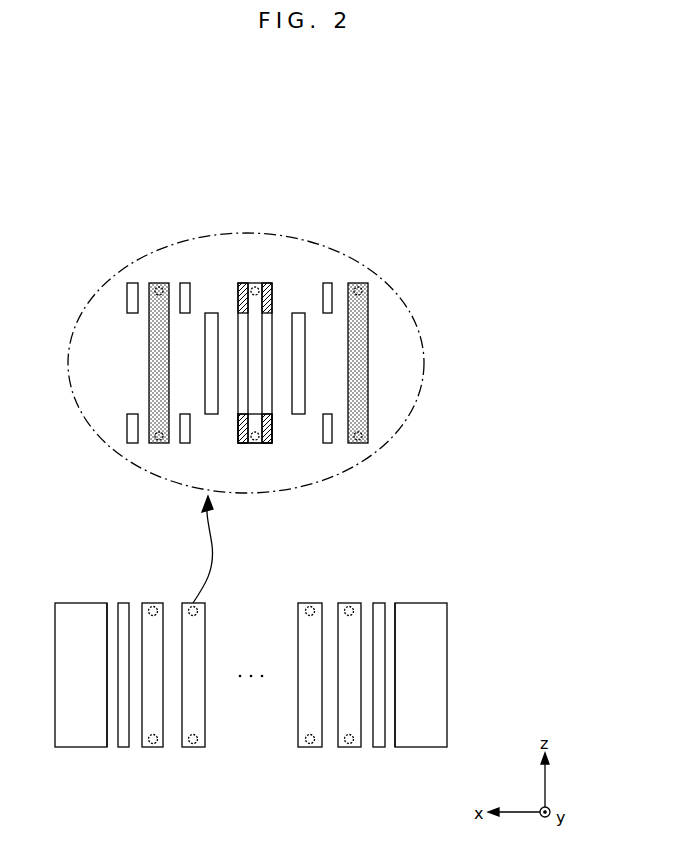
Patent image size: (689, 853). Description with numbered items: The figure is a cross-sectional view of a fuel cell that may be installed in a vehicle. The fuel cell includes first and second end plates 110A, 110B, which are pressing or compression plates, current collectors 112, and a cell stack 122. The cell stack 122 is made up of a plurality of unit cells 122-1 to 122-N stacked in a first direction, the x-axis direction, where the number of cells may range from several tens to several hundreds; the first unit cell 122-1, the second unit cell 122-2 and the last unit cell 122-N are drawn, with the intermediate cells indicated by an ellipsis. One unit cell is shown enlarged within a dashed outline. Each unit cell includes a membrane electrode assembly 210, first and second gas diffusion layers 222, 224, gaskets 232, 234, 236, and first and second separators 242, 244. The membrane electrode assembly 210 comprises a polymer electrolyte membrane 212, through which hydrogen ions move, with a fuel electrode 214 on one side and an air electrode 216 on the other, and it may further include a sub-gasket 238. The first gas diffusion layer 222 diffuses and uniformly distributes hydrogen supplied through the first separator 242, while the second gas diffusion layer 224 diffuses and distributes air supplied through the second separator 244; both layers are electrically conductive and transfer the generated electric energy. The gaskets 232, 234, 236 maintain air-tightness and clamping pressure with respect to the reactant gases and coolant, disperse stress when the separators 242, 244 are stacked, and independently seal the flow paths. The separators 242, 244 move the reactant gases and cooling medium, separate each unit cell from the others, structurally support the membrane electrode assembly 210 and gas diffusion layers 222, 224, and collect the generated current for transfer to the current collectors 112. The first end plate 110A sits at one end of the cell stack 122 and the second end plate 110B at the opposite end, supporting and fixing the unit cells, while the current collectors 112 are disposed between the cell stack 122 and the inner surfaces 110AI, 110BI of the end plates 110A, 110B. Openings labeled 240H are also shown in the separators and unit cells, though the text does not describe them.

The membrane electrode assembly 210 is at (303, 150).
The polymer electrolyte membrane 212 is at (255, 292).
The fuel electrode 214 is at (236, 333).
The air electrode 216 is at (270, 333).
The first gas diffusion layer 222 is at (212, 313).
The second gas diffusion layer 224 is at (298, 313).
The gasket 232 is at (187, 284).
The gasket 234 is at (132, 284).
The gasket 236 is at (328, 284).
The sub-gasket 238 is at (238, 430).
The first separator 242 is at (158, 284).
The second separator 244 is at (360, 284).
The electrode hole 240H is at (360, 292).
The first end plate 110A is at (78, 603).
The second end plate 110B is at (430, 603).
The inner surface of first end plate 110AI is at (112, 747).
The inner surface of second end plate 110BI is at (393, 747).
The current collector 112 is at (122, 603).
The cell stack 122 is at (383, 800).
The unit cell 122-1 is at (147, 747).
The unit cell 122-2 is at (200, 747).
The unit cell 122-N is at (355, 747).